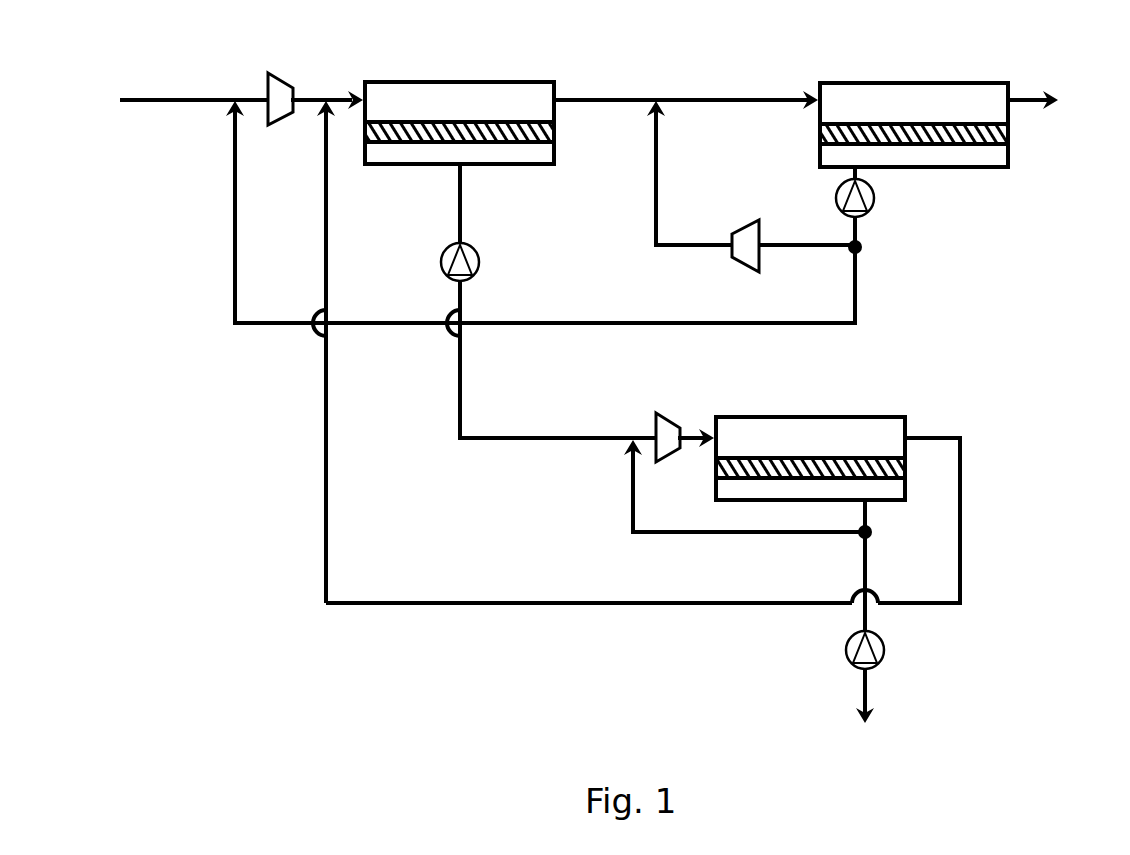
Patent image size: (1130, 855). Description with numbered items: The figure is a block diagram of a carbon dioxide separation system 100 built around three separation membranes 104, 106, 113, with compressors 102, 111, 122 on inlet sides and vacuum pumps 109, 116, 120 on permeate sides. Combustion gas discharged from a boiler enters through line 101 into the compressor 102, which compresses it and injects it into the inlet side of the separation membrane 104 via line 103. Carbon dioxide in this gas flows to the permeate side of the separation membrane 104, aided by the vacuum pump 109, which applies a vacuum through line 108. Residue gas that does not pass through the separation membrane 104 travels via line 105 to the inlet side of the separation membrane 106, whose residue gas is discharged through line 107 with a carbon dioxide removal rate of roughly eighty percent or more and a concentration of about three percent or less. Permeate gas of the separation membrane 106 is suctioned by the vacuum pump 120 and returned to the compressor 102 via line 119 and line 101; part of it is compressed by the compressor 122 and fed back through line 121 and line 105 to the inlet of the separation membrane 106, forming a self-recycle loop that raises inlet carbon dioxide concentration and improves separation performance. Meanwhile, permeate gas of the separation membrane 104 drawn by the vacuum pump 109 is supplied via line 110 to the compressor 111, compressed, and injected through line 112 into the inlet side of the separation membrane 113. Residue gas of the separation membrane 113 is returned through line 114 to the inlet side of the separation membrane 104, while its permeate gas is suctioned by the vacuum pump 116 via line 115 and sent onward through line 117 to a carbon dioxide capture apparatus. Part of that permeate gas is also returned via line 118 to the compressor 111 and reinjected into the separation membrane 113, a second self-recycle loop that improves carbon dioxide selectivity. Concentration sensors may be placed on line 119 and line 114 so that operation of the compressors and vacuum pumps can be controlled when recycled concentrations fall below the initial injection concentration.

The carbon dioxide separation system 100 is at (182, 456).
The line 101 is at (168, 100).
The compressor 102 is at (282, 72).
The line 103 is at (330, 98).
The separation membrane 104 is at (505, 82).
The line 105 is at (672, 100).
The separation membrane 106 is at (868, 83).
The line 107 is at (1026, 98).
The line 108 is at (462, 210).
The vacuum pump 109 is at (478, 268).
The line 110 is at (480, 438).
The compressor 111 is at (657, 412).
The line 112 is at (686, 432).
The separation membrane 113 is at (822, 417).
The line 114 is at (582, 617).
The line 115 is at (857, 565).
The vacuum pump 116 is at (886, 648).
The line 117 is at (872, 694).
The line 118 is at (627, 508).
The line 119 is at (860, 310).
The vacuum pump 120 is at (876, 205).
The line 121 is at (658, 190).
The compressor 122 is at (743, 220).